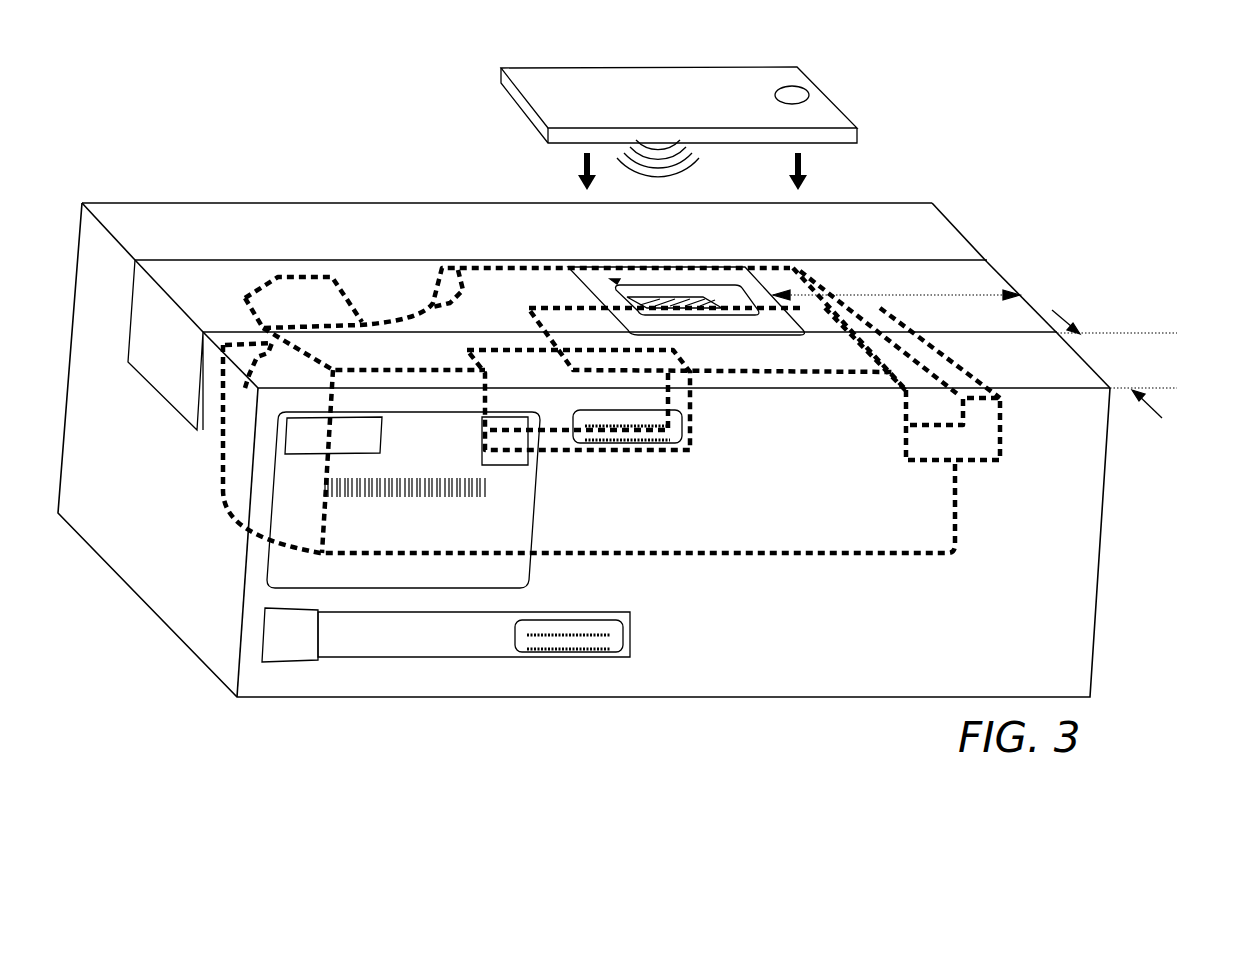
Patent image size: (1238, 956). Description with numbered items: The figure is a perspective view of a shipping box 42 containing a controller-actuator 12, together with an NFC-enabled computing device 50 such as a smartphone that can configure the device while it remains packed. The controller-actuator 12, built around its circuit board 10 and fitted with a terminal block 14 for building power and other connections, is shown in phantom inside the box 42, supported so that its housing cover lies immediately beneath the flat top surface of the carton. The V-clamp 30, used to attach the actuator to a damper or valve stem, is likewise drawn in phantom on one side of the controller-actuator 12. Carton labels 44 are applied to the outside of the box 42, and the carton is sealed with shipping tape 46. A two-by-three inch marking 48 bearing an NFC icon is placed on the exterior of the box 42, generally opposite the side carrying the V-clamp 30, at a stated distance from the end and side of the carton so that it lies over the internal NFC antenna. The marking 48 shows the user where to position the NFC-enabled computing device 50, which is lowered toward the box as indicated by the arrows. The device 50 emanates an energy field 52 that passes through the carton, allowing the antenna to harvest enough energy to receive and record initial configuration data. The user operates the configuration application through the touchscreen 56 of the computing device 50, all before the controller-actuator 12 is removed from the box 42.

The circuit board 10 is at (813, 327).
The controller-actuator 12 is at (807, 517).
The terminal block 14 is at (960, 380).
The V-clamp 30 is at (305, 297).
The box 42 is at (435, 223).
The carton labels 44 is at (282, 573).
The shipping tape 46 is at (183, 280).
The 2×3 inch marking 48 is at (743, 283).
The NFC-enabled computing device 50 is at (748, 82).
The energy field 52 is at (687, 172).
The touchscreen 56 is at (538, 82).